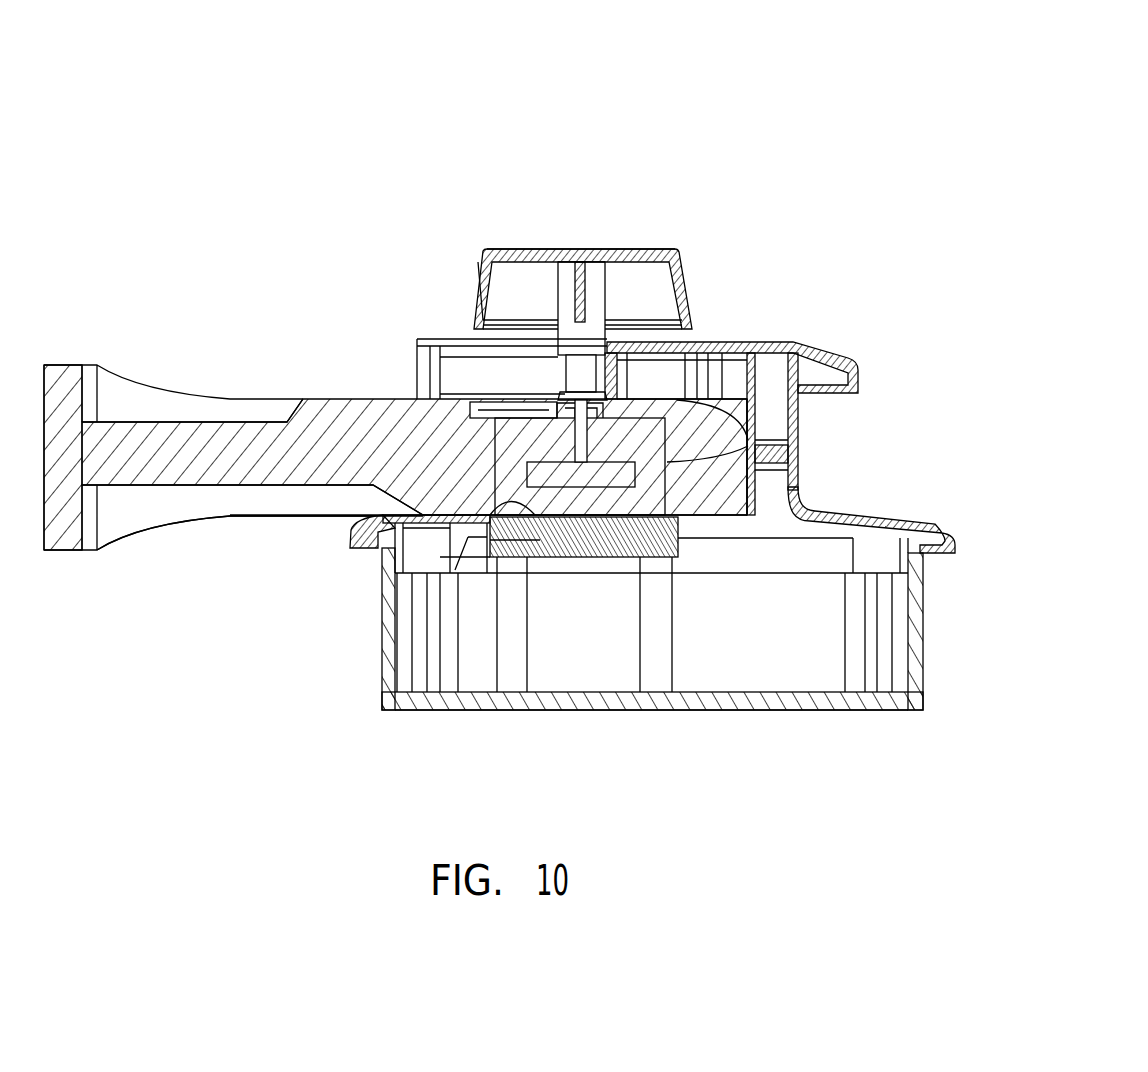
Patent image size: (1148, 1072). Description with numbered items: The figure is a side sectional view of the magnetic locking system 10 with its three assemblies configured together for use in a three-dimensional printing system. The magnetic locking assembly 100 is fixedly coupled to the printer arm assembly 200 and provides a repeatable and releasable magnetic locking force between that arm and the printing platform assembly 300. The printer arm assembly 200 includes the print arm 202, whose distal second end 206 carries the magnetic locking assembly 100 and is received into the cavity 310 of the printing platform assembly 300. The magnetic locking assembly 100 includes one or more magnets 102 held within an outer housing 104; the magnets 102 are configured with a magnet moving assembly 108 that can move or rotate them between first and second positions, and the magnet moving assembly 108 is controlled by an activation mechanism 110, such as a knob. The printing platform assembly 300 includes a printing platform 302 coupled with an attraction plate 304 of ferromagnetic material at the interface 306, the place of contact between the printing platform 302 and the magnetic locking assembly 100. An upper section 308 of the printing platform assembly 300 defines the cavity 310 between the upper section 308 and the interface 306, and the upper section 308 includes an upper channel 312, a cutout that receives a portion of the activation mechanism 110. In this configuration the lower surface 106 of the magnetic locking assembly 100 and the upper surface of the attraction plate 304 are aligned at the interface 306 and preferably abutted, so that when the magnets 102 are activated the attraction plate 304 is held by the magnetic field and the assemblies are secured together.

The magnetic locking system 10 is at (737, 75).
The magnetic locking assembly 100 is at (670, 193).
The magnets 102 is at (786, 447).
The outer housing 104 is at (745, 425).
The lower surface 106 is at (490, 545).
The magnet moving assembly 108 is at (540, 412).
The activation mechanism 110 is at (505, 250).
The printer arm assembly 200 is at (192, 324).
The print arm 202 is at (208, 520).
The second end 206 is at (757, 498).
The printing platform assembly 300 is at (635, 760).
The printing platform 302 is at (775, 702).
The attraction plate 304 is at (632, 558).
The interface 306 is at (540, 557).
The upper section 308 is at (700, 345).
The cavity 310 is at (476, 448).
The upper channel 312 is at (487, 358).